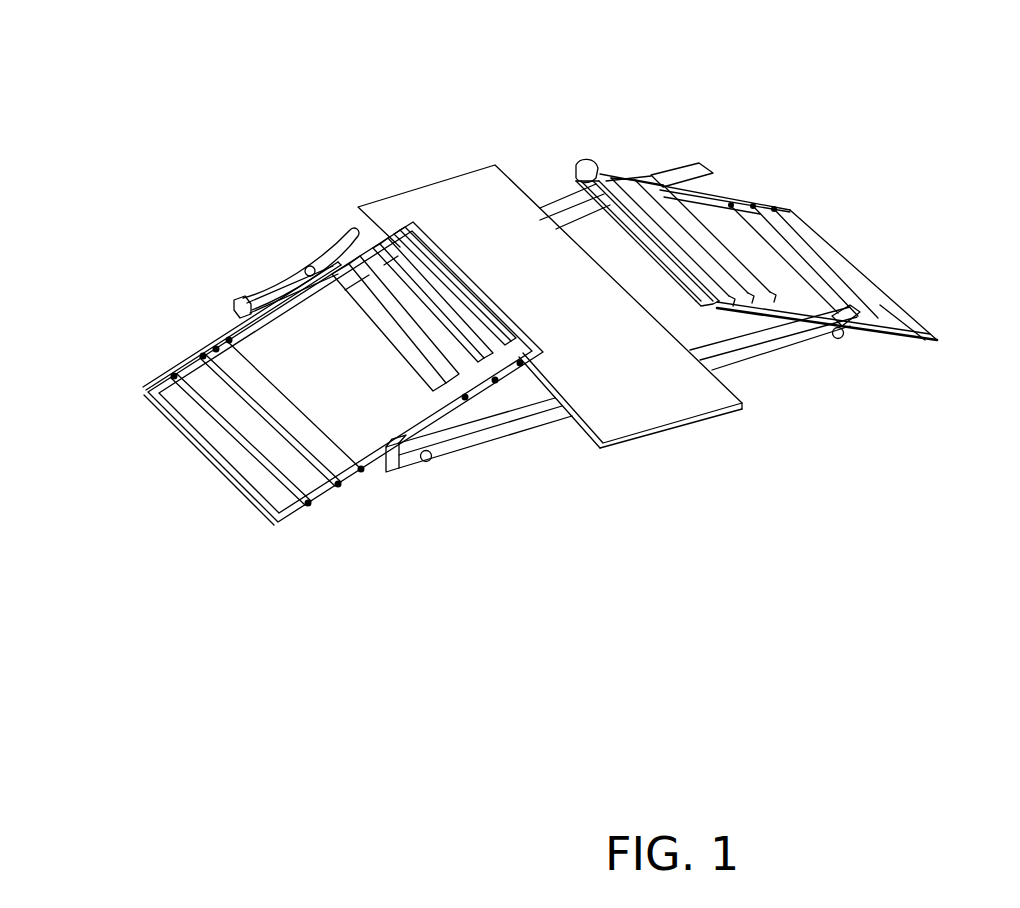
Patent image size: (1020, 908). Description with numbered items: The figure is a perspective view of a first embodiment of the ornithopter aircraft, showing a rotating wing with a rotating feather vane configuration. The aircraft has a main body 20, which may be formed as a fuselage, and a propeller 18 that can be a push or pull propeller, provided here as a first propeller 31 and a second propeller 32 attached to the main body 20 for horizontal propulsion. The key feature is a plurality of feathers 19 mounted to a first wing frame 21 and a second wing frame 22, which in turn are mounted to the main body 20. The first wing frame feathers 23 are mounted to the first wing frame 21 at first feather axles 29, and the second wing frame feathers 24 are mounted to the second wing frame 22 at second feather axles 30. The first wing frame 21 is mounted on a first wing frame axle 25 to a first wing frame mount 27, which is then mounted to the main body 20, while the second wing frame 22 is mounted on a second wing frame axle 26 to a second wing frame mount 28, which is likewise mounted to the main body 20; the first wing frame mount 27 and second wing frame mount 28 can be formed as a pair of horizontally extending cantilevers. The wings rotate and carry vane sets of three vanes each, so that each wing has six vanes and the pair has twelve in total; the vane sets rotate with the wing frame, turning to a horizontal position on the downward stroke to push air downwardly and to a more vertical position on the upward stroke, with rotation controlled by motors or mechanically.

The propeller 18 is at (575, 155).
The feathers 19 is at (285, 372).
The main body 20 is at (535, 233).
The first wing frame 21 is at (756, 203).
The second wing frame 22 is at (202, 293).
The first wing frame feathers 23 is at (843, 262).
The second wing frame feathers 24 is at (177, 483).
The first wing frame axle 25 is at (846, 332).
The second wing frame axle 26 is at (396, 545).
The first wing frame mount 27 is at (748, 353).
The second wing frame mount 28 is at (483, 432).
The first feather axles 29 is at (733, 200).
The second feather axles 30 is at (390, 230).
The first propeller 31 is at (588, 178).
The second propeller 32 is at (296, 208).